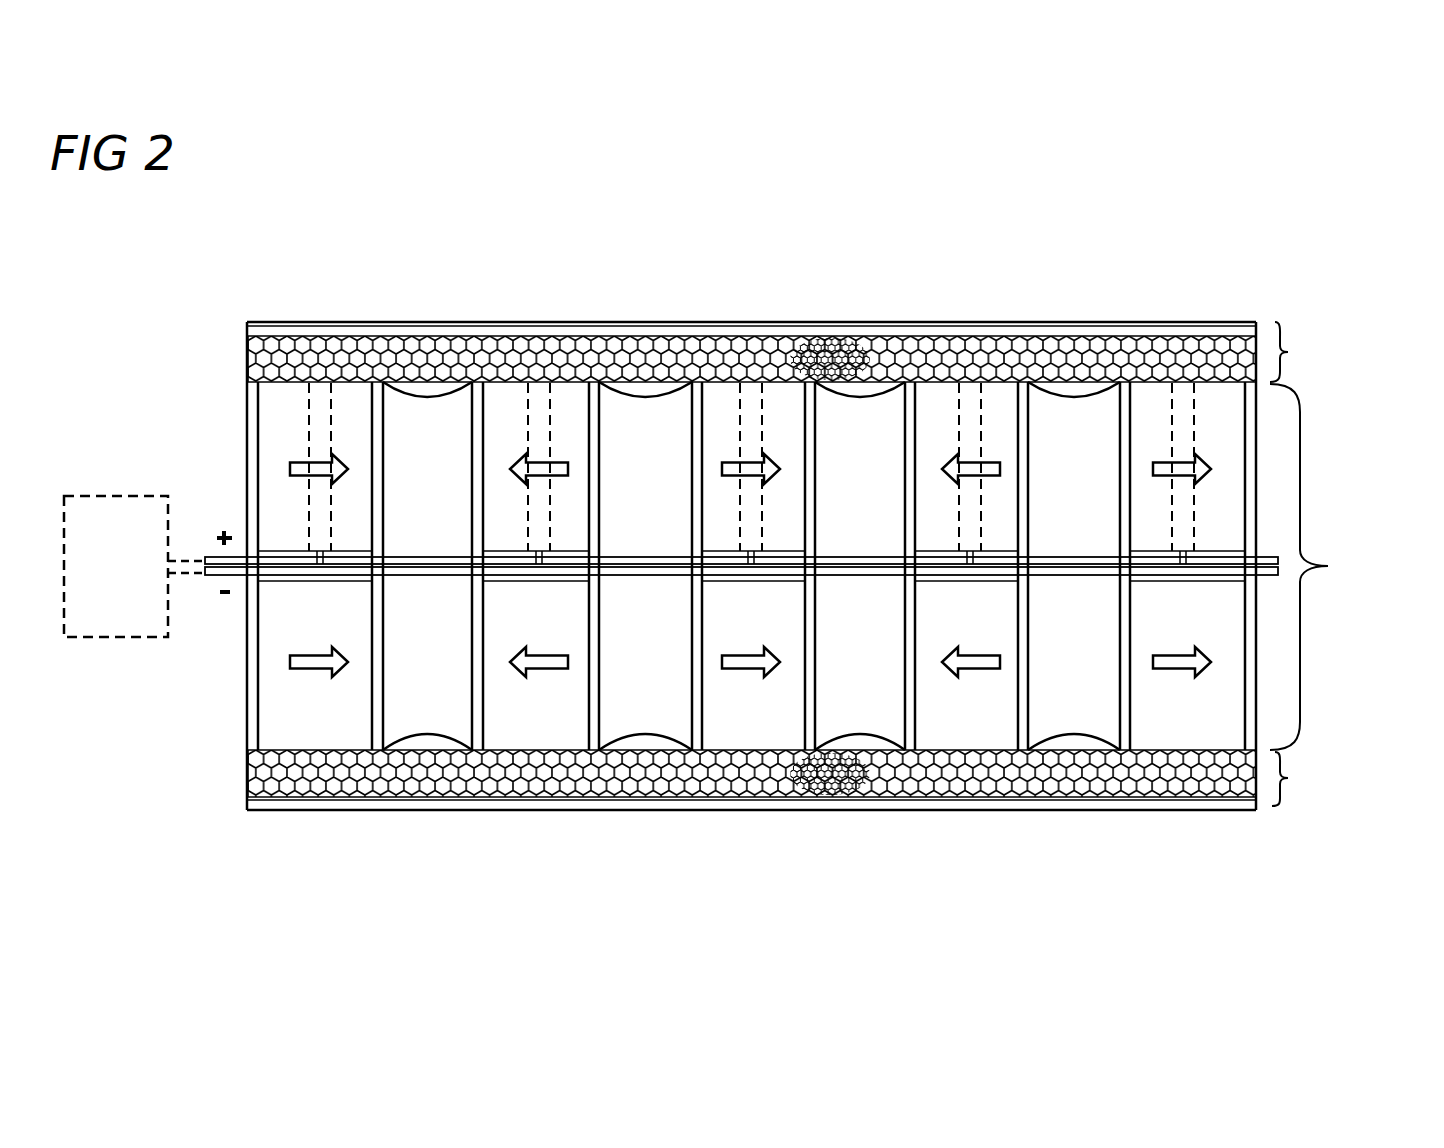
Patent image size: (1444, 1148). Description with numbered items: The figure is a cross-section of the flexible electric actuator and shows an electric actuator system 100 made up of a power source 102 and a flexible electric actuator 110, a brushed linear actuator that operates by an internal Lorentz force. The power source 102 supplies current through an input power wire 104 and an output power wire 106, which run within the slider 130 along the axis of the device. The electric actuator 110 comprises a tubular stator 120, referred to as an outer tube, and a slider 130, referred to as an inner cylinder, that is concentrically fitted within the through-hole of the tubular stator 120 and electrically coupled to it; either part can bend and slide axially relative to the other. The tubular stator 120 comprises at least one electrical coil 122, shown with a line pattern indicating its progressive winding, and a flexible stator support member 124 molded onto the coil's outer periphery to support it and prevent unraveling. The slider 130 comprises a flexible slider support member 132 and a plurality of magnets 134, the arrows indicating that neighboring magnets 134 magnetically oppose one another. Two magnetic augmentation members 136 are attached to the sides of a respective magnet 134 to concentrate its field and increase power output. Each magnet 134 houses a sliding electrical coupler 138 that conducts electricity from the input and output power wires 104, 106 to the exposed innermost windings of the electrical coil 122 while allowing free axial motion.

The electric actuator system 100 is at (300, 172).
The power source 102 is at (94, 496).
The input power wire 104 is at (208, 557).
The output power wire 106 is at (208, 577).
The flexible electric actuator 110 is at (890, 195).
The tubular stator 120 is at (1105, 320).
The electrical coil 122 is at (243, 767).
The flexible stator support member 124 is at (330, 810).
The slider 130 is at (240, 393).
The flexible slider support member 132 is at (1072, 737).
The magnet 134 is at (553, 723).
The magnetic augmentation member 136 is at (470, 718).
The sliding electrical coupler 138 is at (549, 410).